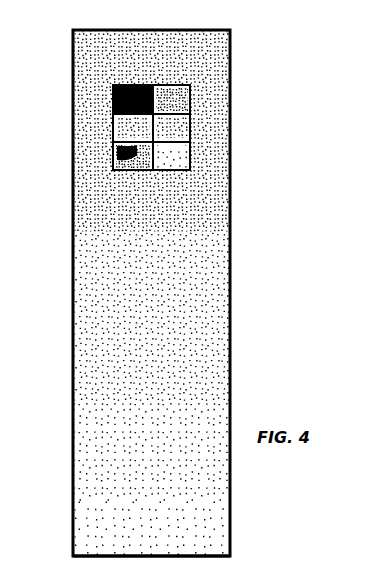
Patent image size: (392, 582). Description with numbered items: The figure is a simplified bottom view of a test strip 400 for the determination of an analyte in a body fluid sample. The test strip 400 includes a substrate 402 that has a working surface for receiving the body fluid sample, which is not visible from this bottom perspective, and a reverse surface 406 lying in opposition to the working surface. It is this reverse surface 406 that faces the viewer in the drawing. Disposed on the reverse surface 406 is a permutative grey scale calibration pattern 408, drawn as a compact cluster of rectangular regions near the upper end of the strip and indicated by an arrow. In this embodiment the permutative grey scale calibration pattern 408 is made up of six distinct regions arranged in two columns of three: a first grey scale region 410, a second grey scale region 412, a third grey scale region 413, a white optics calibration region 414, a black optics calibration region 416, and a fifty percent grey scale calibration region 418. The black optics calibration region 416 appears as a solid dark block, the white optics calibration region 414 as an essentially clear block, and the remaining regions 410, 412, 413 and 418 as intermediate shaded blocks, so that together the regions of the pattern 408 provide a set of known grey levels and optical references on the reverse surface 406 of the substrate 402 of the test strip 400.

The test strip 400 is at (246, 53).
The substrate 402 is at (214, 556).
The reverse surface 406 is at (218, 315).
The permutative grey scale calibration pattern 408 is at (153, 177).
The first grey scale region 410 is at (190, 97).
The second grey scale region 412 is at (120, 129).
The third grey scale region 413 is at (117, 160).
The white optics calibration region 414 is at (180, 156).
The black optics calibration region 416 is at (113, 98).
The 50% grey scale calibration region 418 is at (180, 128).